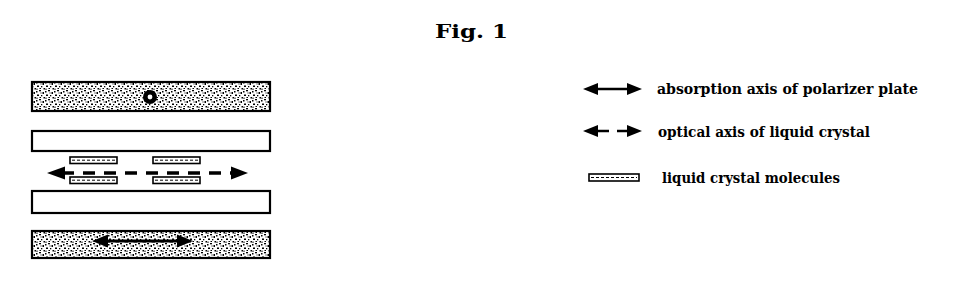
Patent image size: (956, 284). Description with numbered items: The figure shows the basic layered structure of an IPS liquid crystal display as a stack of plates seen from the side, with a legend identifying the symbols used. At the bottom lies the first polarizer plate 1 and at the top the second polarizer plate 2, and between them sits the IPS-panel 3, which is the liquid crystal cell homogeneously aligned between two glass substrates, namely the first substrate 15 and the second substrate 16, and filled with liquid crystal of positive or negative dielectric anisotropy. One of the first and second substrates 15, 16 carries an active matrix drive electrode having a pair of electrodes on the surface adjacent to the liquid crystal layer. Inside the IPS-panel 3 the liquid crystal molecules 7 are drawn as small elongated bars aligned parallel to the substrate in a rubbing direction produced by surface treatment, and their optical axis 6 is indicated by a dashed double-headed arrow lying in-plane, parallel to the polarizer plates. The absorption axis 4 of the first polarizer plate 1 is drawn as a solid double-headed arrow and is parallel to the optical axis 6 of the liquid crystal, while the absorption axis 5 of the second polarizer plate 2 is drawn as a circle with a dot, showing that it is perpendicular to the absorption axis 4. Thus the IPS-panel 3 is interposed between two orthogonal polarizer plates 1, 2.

The first polarizer plate 1 is at (244, 244).
The second polarizer plate 2 is at (255, 96).
The IPS-panel 3 is at (301, 169).
The absorption axis of the first polarizer plate 4 is at (166, 244).
The absorption axis of the second polarizer plate 5 is at (190, 97).
The optical axis of liquid crystal 6 is at (158, 172).
The liquid crystal molecules 7 is at (146, 169).
The first substrate 15 is at (229, 202).
The second substrate 16 is at (240, 139).